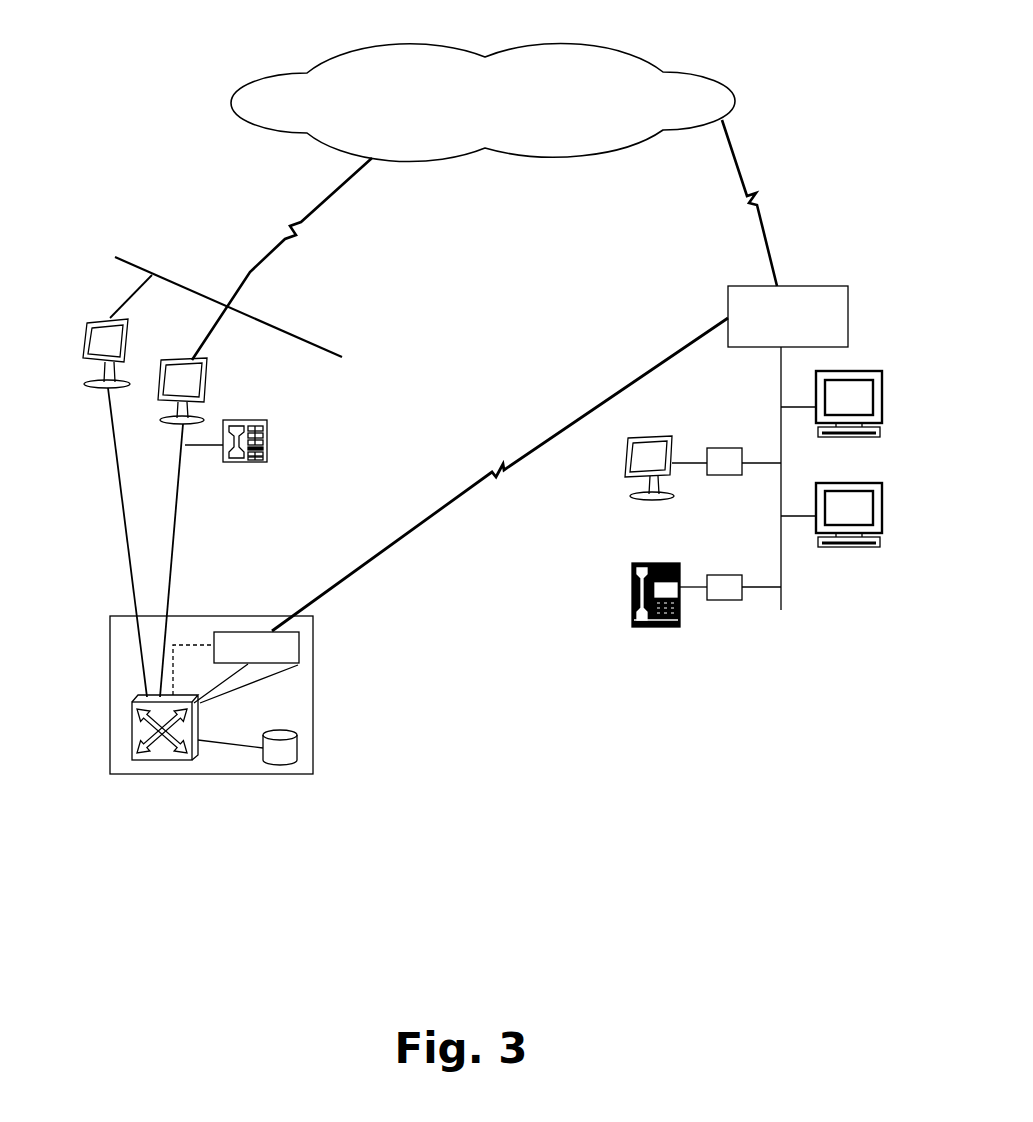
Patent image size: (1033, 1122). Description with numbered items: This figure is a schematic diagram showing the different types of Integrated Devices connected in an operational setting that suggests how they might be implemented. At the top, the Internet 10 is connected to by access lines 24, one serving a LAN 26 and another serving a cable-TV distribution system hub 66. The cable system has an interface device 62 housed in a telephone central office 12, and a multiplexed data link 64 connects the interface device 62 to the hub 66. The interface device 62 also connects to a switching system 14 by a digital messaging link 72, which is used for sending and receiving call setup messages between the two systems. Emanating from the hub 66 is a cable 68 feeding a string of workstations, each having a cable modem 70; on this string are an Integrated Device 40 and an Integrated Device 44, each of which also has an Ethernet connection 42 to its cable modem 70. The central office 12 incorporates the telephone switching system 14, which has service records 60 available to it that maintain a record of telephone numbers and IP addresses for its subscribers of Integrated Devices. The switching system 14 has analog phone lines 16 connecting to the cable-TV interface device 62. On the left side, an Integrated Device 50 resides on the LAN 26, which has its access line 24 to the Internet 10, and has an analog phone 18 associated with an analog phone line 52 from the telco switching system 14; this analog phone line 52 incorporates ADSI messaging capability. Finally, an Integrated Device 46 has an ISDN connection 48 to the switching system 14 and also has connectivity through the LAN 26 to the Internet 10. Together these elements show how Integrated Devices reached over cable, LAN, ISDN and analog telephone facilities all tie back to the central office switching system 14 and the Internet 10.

The Internet 10 is at (364, 40).
The telephone central office 12 is at (102, 682).
The switching system 14 is at (153, 768).
The analog phone lines 16 is at (255, 682).
The analog phone 18 is at (277, 445).
The access lines 24 is at (337, 229).
The LAN 26 is at (178, 270).
The Integrated Device 40 is at (622, 487).
The Ethernet connection 42 is at (685, 458).
The Integrated Device 44 is at (628, 617).
The Integrated Device 46 is at (78, 340).
The ISDN connection 48 is at (117, 525).
The Integrated Device 50 is at (207, 393).
The analog phone line 52 is at (182, 548).
The service records 60 is at (280, 772).
The interface device 62 is at (307, 643).
The multiplexed data link 64 is at (490, 465).
The cable-TV distribution system hub 66 is at (812, 280).
The cable 68 is at (772, 393).
The cable modem 70 is at (723, 478).
The digital messaging link 72 is at (183, 640).